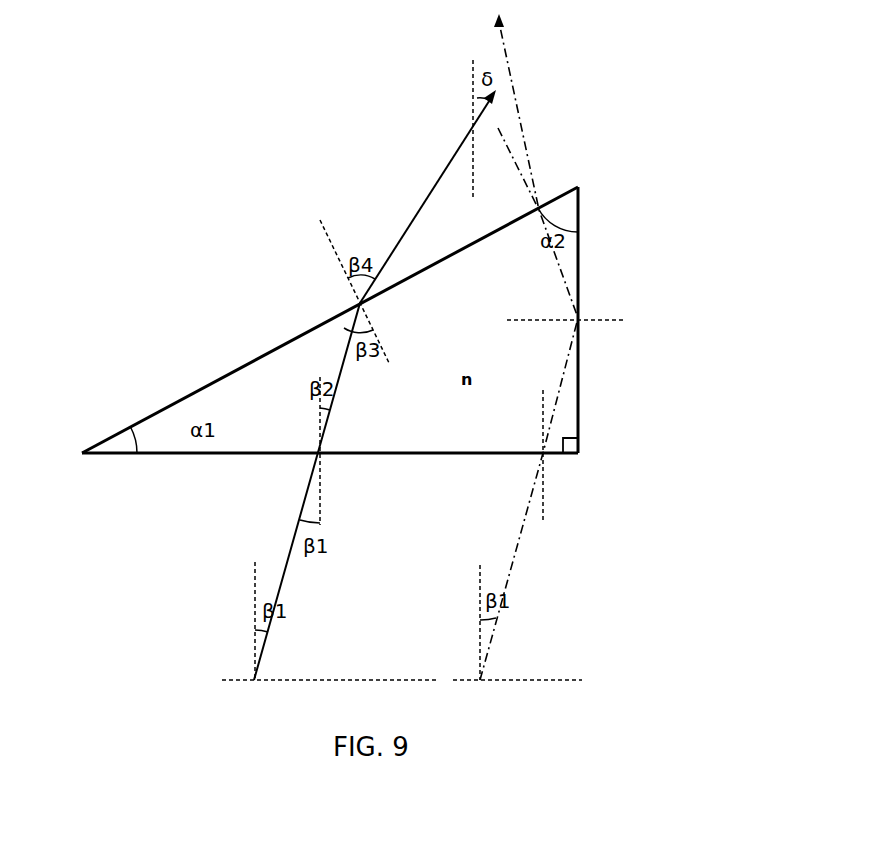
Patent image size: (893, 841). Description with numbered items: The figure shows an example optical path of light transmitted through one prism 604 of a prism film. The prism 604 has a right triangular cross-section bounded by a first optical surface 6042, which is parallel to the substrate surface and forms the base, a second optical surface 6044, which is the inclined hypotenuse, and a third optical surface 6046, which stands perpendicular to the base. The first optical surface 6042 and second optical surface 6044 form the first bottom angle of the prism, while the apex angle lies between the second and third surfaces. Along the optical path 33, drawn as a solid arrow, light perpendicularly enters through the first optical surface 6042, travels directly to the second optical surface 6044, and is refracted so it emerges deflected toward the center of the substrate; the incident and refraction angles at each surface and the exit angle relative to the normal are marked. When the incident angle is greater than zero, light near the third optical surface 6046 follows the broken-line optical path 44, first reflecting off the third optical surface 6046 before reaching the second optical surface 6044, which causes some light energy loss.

The optical path 33 is at (435, 182).
The optical path 44 is at (518, 124).
The prism 604 is at (422, 376).
The first optical surface 6042 is at (468, 455).
The second optical surface 6044 is at (300, 338).
The third optical surface 6046 is at (578, 378).